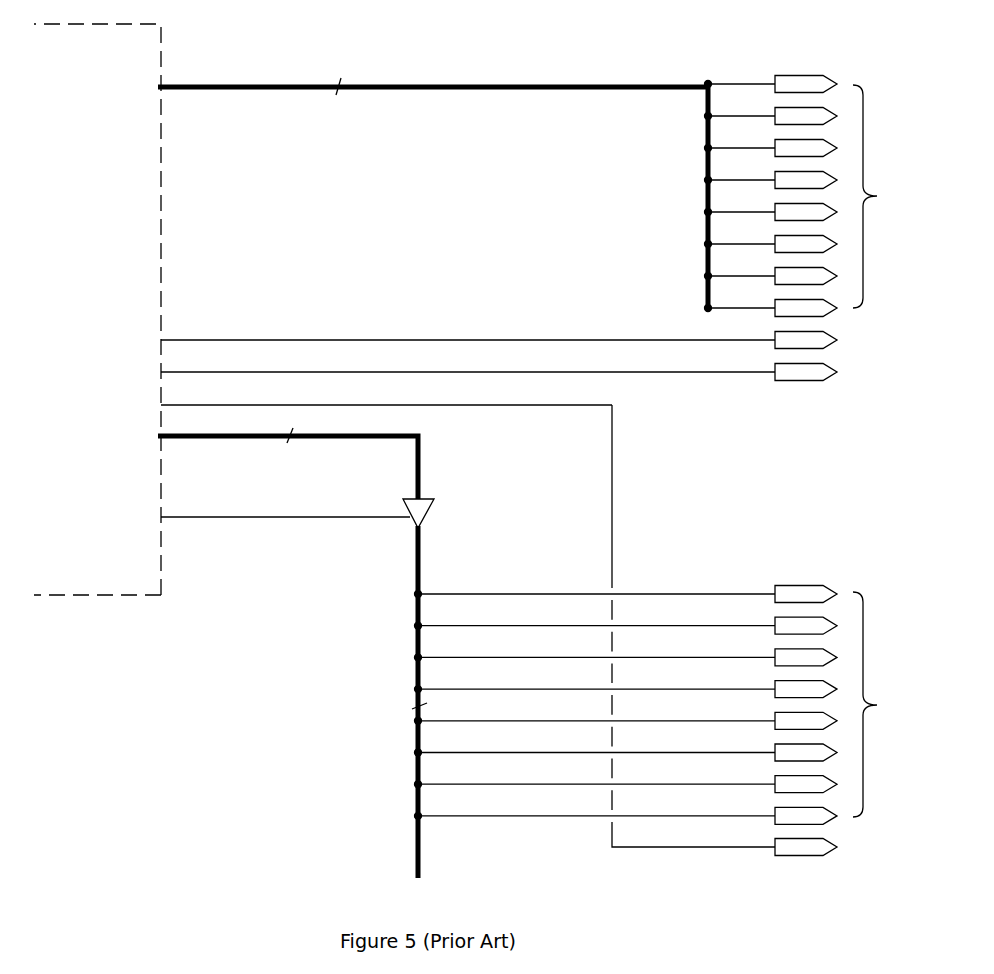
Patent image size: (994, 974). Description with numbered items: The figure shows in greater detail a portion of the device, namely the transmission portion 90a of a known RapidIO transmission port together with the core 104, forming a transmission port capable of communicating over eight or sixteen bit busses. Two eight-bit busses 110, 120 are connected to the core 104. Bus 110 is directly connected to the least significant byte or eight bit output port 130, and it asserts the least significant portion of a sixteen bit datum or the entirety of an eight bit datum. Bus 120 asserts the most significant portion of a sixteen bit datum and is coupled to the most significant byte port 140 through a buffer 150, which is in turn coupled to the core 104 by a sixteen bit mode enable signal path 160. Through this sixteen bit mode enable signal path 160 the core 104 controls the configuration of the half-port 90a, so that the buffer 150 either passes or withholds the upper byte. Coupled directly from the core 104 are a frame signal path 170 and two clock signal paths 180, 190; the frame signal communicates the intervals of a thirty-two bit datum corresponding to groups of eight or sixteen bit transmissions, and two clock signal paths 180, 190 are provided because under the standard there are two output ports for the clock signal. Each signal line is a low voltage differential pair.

The transmission portion 90a is at (338, 642).
The core 104 is at (97, 309).
The bus 110 is at (370, 87).
The bus 120 is at (348, 437).
The least significant byte/8 bit output port 130 is at (814, 196).
The most significant byte port 140 is at (665, 702).
The buffer 150 is at (427, 499).
The 16 bit mode enable signal path 160 is at (240, 517).
The frame signal path 170 is at (520, 372).
The clock signal path 180 is at (520, 341).
The clock signal path 190 is at (521, 632).